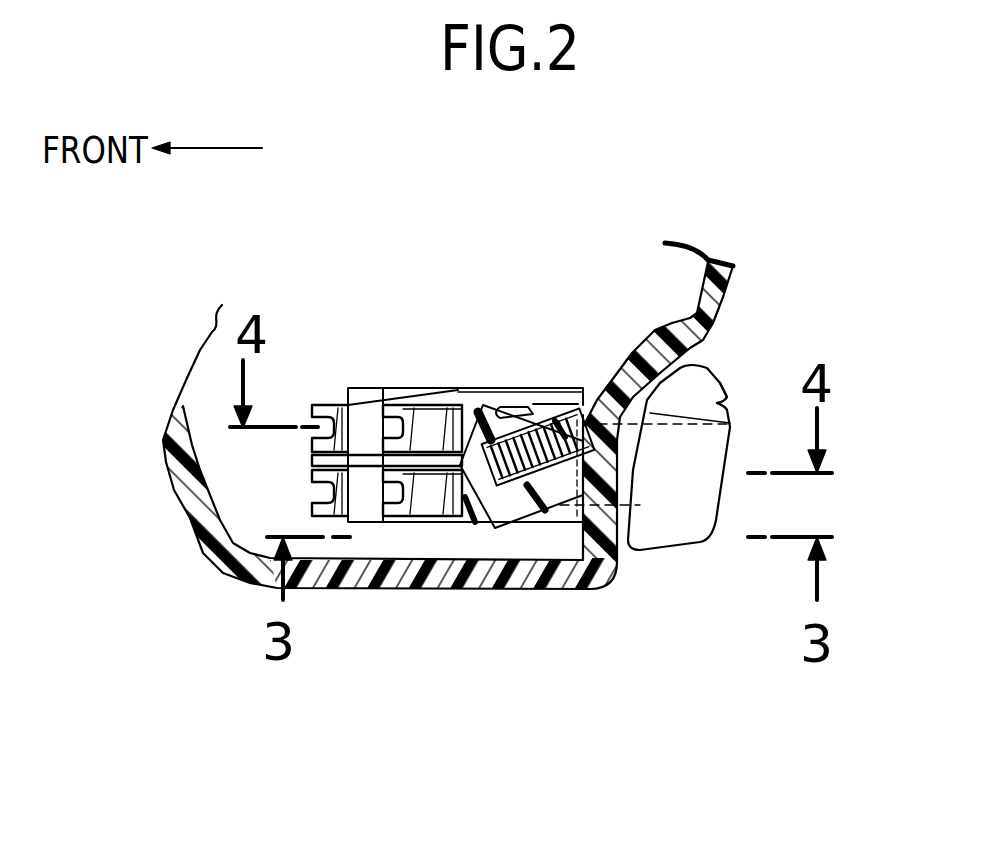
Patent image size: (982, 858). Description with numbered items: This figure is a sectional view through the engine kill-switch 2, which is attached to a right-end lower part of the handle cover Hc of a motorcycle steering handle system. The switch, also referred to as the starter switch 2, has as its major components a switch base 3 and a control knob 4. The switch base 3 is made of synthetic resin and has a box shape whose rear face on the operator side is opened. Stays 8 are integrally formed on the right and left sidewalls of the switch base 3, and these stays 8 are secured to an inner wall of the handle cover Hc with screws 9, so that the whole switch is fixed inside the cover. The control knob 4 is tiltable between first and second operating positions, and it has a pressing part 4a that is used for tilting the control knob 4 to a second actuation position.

The engine kill-switch 2 is at (356, 398).
The switch base 3 is at (517, 396).
The control knob 4 is at (712, 498).
The pressing part 4a is at (727, 398).
The stay 8 is at (503, 530).
The screw 9 is at (482, 510).
The handle cover Hc is at (362, 587).